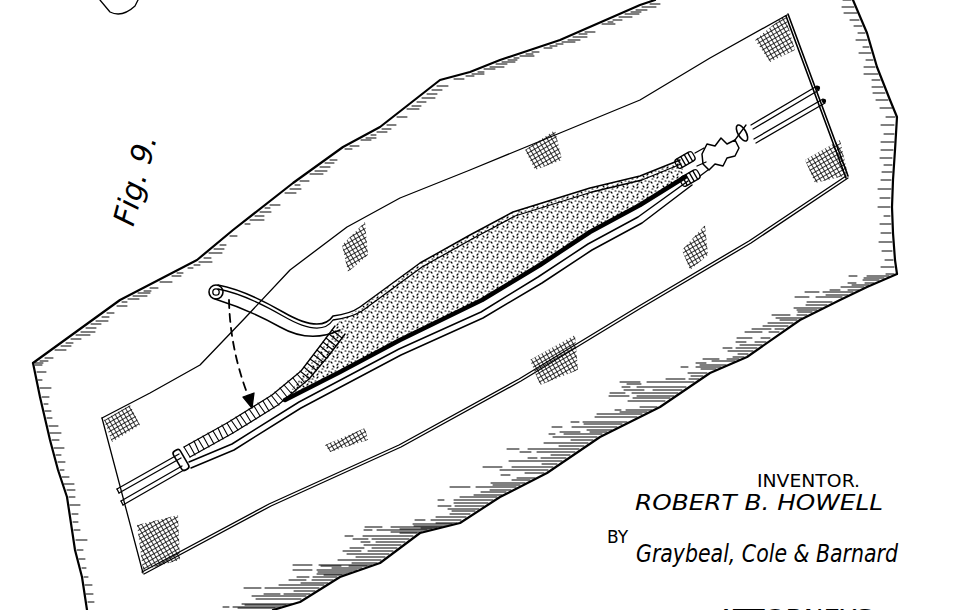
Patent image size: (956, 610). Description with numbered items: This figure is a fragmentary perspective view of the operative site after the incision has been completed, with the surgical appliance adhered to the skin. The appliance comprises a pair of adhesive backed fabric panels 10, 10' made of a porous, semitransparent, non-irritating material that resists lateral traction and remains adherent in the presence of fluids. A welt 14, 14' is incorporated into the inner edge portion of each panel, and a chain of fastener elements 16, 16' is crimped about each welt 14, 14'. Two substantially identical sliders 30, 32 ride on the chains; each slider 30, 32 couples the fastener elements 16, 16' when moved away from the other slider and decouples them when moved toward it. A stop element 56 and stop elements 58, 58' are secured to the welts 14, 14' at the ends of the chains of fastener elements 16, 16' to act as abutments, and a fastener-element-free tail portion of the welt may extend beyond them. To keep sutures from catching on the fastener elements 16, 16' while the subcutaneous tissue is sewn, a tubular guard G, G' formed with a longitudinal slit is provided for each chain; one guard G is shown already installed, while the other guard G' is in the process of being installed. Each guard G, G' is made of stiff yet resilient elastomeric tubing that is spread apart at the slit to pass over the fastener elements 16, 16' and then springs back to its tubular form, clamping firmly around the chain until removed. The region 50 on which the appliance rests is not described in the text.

The support block 50 is at (156, 0).
The adhesive backed fabric panel 10 is at (475, 294).
The adhesive backed fabric panel 10' is at (444, 216).
The welt 14 is at (159, 492).
The welt 14' is at (149, 463).
The fastener elements 16 is at (440, 332).
The fastener elements 16' is at (254, 391).
The stop element 56 is at (186, 464).
The slider 30 is at (704, 149).
The slider 32 is at (738, 133).
The stop element 58 is at (790, 147).
The stop element 58' is at (785, 94).
The tubular guard G is at (485, 280).
The tubular guard G' is at (445, 248).